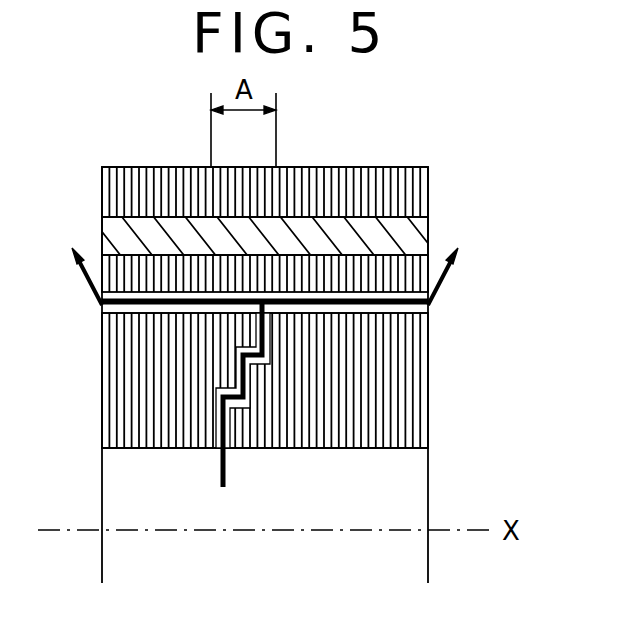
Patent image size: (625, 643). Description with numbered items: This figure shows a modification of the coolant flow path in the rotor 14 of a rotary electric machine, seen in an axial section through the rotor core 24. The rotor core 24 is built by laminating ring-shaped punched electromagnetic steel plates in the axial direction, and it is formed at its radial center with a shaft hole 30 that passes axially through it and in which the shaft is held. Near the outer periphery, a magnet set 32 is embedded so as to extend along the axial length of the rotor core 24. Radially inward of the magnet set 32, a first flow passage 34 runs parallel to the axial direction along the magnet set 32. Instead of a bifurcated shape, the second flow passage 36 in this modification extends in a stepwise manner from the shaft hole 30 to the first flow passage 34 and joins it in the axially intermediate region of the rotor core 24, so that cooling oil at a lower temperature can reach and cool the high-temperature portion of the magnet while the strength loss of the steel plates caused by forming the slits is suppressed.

The rotor 14 is at (487, 197).
The rotor core 24 is at (430, 174).
The magnet set 32 is at (120, 233).
The first flow passage 34 is at (413, 313).
The shaft hole 30 is at (385, 449).
The second flow passage 36 is at (282, 346).